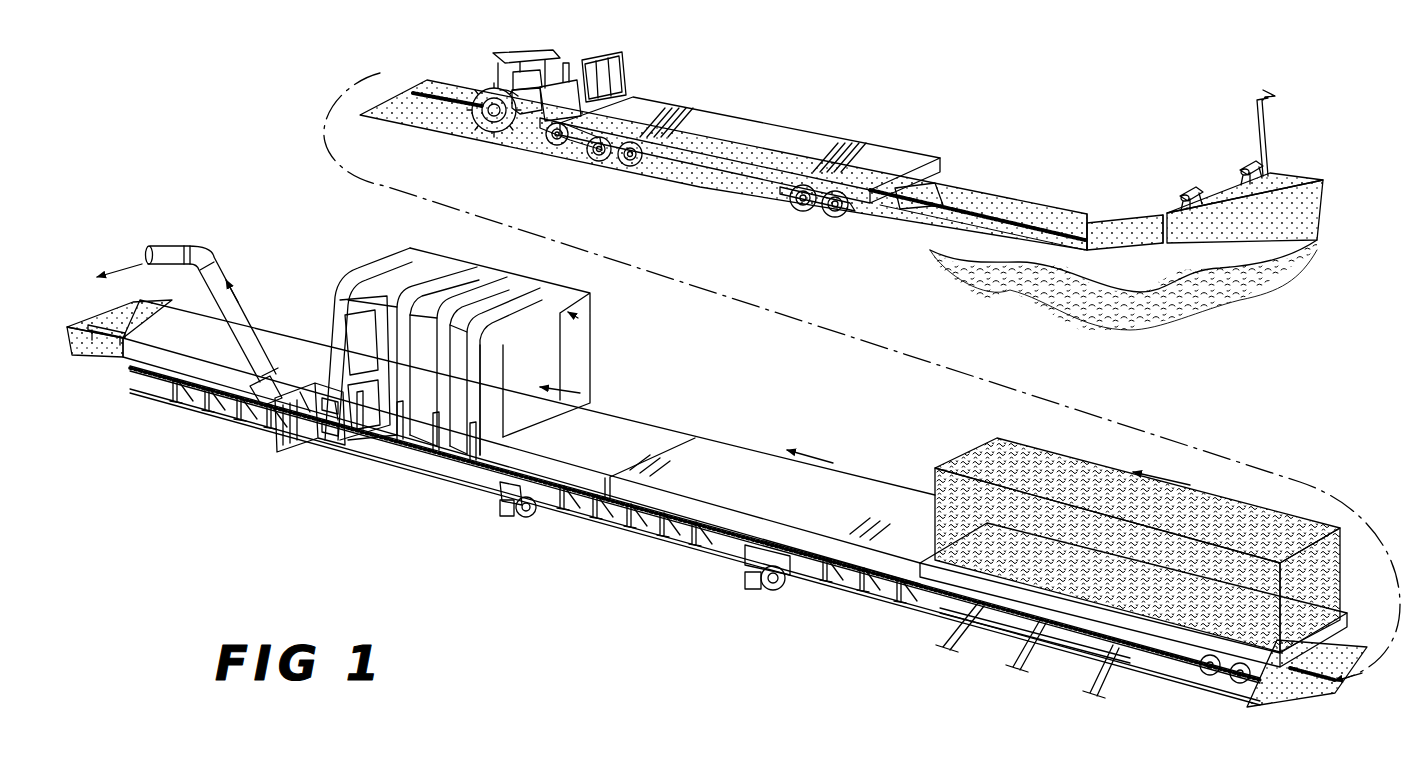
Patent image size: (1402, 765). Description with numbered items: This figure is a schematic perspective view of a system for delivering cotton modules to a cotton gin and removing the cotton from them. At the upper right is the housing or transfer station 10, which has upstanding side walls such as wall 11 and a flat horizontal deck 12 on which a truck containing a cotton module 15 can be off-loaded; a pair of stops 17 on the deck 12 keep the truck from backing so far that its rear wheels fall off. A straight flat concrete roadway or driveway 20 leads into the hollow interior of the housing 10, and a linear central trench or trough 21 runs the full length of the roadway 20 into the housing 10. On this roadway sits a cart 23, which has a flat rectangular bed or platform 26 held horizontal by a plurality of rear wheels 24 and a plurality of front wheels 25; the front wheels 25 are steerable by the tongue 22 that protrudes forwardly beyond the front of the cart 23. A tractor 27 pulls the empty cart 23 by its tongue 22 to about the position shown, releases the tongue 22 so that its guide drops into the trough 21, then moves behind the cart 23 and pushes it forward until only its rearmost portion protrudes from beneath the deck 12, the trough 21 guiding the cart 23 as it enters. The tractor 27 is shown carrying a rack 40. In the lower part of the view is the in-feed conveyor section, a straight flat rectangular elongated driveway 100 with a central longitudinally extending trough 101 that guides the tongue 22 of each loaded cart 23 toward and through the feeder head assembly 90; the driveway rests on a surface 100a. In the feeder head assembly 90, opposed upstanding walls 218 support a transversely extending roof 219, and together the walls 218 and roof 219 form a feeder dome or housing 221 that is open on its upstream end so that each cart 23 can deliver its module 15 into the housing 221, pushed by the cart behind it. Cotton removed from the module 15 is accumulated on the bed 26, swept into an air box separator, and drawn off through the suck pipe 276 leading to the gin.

The housing or transfer station 10 is at (1196, 110).
The side wall 11 is at (1180, 290).
The flat horizontal deck 12 is at (1270, 178).
The cotton module 15 is at (980, 455).
The stops 17 is at (1183, 188).
The concrete roadway or driveway 20 is at (1030, 216).
The central trench or trough 21 is at (933, 220).
The tongue 22 is at (940, 193).
The cart 23 is at (757, 112).
The rear wheels 24 is at (587, 160).
The front wheels 25 is at (827, 203).
The bed or platform 26 is at (900, 153).
The tractor 27 is at (567, 87).
The slab carrying rack 40 is at (617, 53).
The feeder head section or assembly 90 is at (368, 246).
The driveway 100 is at (1267, 690).
The track bed 100a is at (1293, 690).
The central trench or trough 101 is at (1328, 676).
The upstanding walls 218 is at (590, 340).
The roof 219 is at (563, 275).
The feeder dome or housing 221 is at (593, 310).
The suck pipe 276 is at (190, 243).